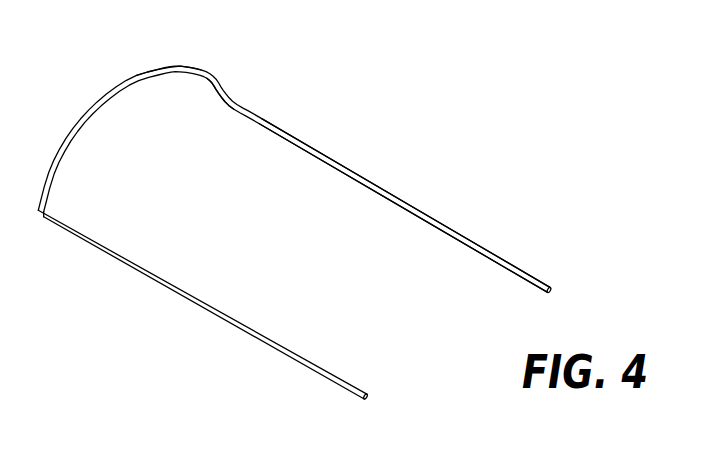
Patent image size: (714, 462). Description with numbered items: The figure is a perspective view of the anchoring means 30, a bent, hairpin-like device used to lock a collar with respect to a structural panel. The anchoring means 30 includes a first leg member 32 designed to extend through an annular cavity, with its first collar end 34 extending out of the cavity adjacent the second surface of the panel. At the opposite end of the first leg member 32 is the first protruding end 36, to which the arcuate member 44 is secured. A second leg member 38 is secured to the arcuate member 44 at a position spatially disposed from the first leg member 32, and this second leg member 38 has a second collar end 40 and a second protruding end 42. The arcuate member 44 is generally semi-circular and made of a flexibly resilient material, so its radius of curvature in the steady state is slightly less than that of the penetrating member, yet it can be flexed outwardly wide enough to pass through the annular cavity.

The anchoring means 30 is at (210, 73).
The first leg member 32 is at (212, 308).
The first collar end 34 is at (358, 397).
The first protruding end 36 is at (42, 213).
The second leg member 38 is at (367, 180).
The second collar end 40 is at (542, 280).
The second protruding end 42 is at (231, 101).
The arcuate member 44 is at (160, 67).